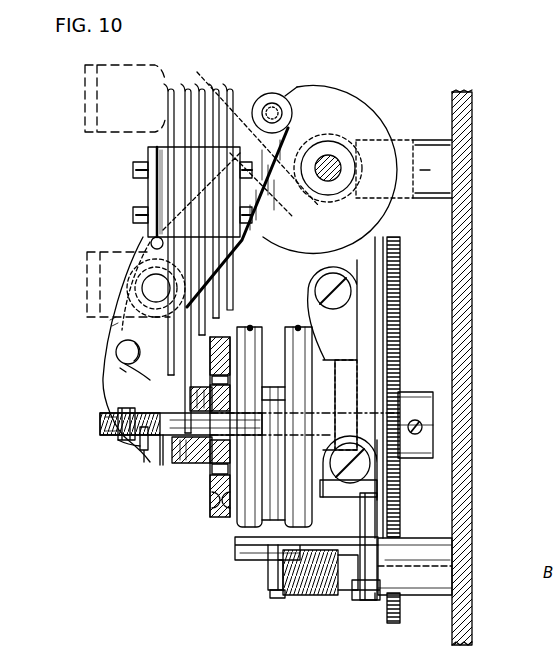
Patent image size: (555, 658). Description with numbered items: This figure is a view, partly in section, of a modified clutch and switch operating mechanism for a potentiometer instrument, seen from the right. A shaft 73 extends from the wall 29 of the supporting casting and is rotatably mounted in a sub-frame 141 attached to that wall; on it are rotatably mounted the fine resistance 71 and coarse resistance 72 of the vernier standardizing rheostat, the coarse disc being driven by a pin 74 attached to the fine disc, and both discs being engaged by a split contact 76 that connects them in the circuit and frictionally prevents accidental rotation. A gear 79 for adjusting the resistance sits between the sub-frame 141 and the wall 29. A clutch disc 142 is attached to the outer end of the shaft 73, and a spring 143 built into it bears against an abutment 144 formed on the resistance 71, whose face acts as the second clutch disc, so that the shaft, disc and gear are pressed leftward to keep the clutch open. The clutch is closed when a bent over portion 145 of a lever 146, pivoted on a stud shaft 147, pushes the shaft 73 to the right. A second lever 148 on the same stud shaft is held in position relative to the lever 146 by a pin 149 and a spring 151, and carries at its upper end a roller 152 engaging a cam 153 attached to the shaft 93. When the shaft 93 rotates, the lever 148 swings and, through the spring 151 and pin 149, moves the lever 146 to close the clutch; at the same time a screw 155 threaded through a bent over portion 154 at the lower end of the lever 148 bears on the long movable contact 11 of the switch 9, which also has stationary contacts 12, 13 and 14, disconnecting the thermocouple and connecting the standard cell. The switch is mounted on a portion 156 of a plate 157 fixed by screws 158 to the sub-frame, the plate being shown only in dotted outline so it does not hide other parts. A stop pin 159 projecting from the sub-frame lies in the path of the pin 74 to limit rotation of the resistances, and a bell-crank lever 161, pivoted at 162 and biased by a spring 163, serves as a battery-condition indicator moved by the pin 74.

The switch 9 is at (153, 112).
The movable contact 11 is at (188, 88).
The stationary contact 12 is at (169, 88).
The stationary contact 13 is at (203, 88).
The stationary contact 14 is at (218, 88).
The wall 29 is at (463, 248).
The fine resistance 71 is at (250, 326).
The coarse resistance 72 is at (298, 326).
The shaft 73 is at (161, 464).
The pin 74 is at (360, 528).
The split contact 76 is at (240, 540).
The gear 79 is at (400, 251).
The shaft 93 is at (327, 155).
The sub-frame 141 is at (368, 600).
The clutch disc 142 is at (220, 518).
The spring 143 is at (210, 470).
The abutment 144 is at (237, 403).
The bent over portion 145 is at (142, 452).
The lever 146 is at (112, 325).
The stud shaft 147 is at (155, 288).
The lever 148 is at (152, 246).
The pin 149 is at (128, 366).
The spring 151 is at (116, 350).
The roller 152 is at (268, 92).
The cam 153 is at (318, 94).
The bent over portion 154 is at (118, 438).
The screw 155 is at (100, 413).
The portion 156 is at (148, 197).
The plate 157 is at (85, 92).
The screw 158 is at (340, 308).
The pin 159 is at (325, 500).
The bell-crank lever 161 is at (272, 598).
The pivot 162 is at (266, 575).
The spring 163 is at (320, 595).